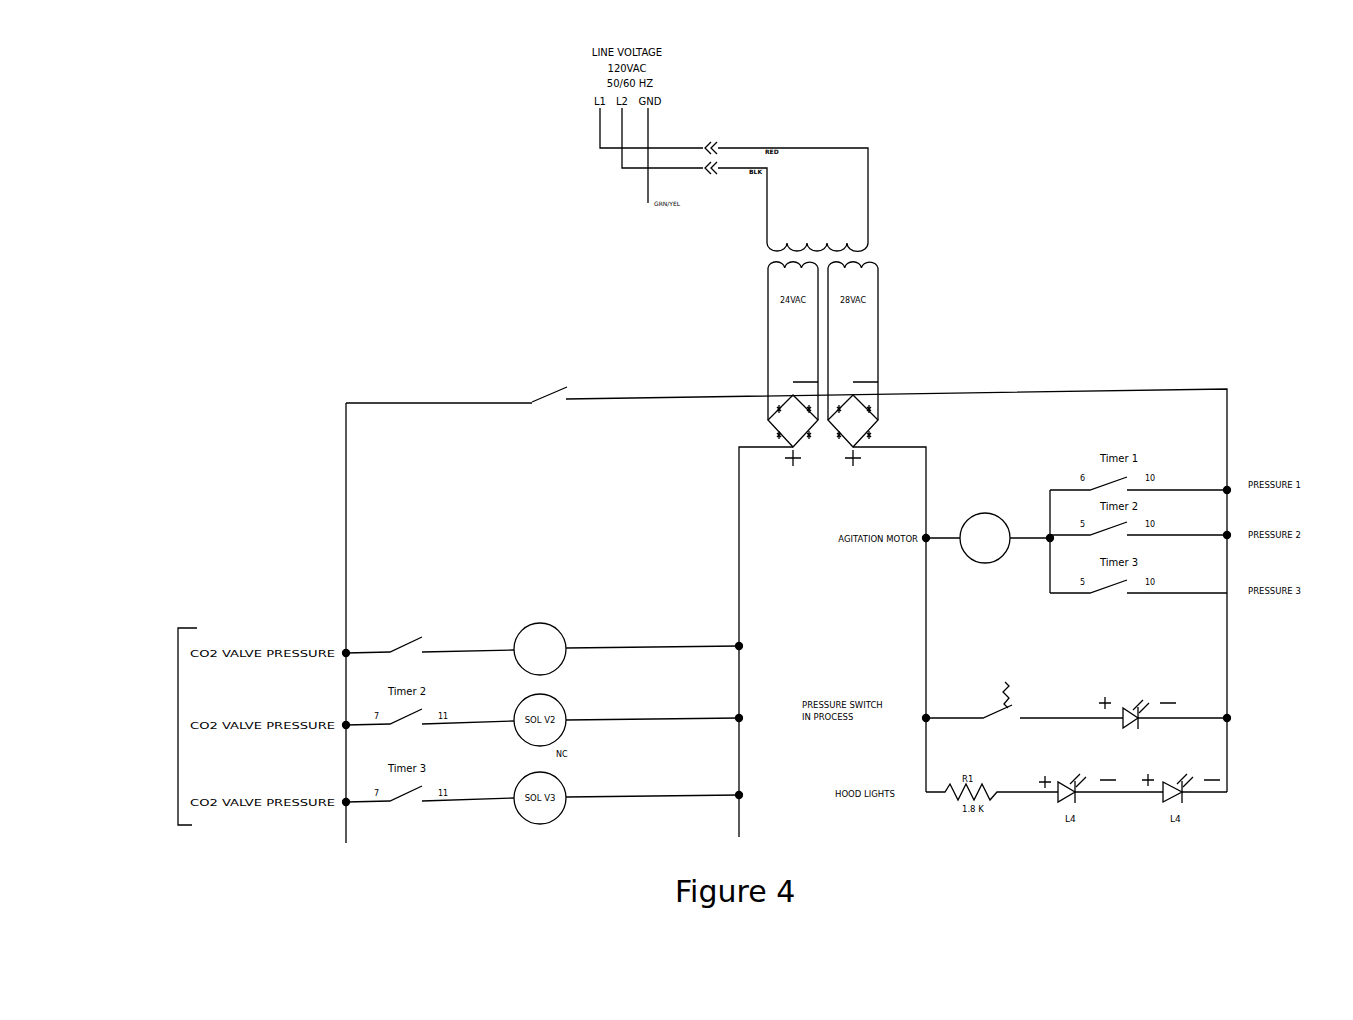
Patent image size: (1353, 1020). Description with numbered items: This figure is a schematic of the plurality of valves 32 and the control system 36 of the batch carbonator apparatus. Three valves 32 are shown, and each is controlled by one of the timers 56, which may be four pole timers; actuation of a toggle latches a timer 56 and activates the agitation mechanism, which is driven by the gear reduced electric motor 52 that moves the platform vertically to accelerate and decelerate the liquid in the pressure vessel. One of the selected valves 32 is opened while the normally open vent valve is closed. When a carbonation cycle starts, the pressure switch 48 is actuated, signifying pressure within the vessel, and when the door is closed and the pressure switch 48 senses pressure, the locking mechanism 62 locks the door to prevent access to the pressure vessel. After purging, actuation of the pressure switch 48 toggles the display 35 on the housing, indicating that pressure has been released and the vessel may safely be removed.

The control system 36 is at (1147, 338).
The locking mechanism 62 is at (524, 389).
The plurality of valves 32 is at (537, 610).
The timers 56 is at (376, 619).
The gear reduced electric motor 52 is at (987, 501).
The pressure switch 48 is at (1027, 693).
The display 35 is at (1149, 740).